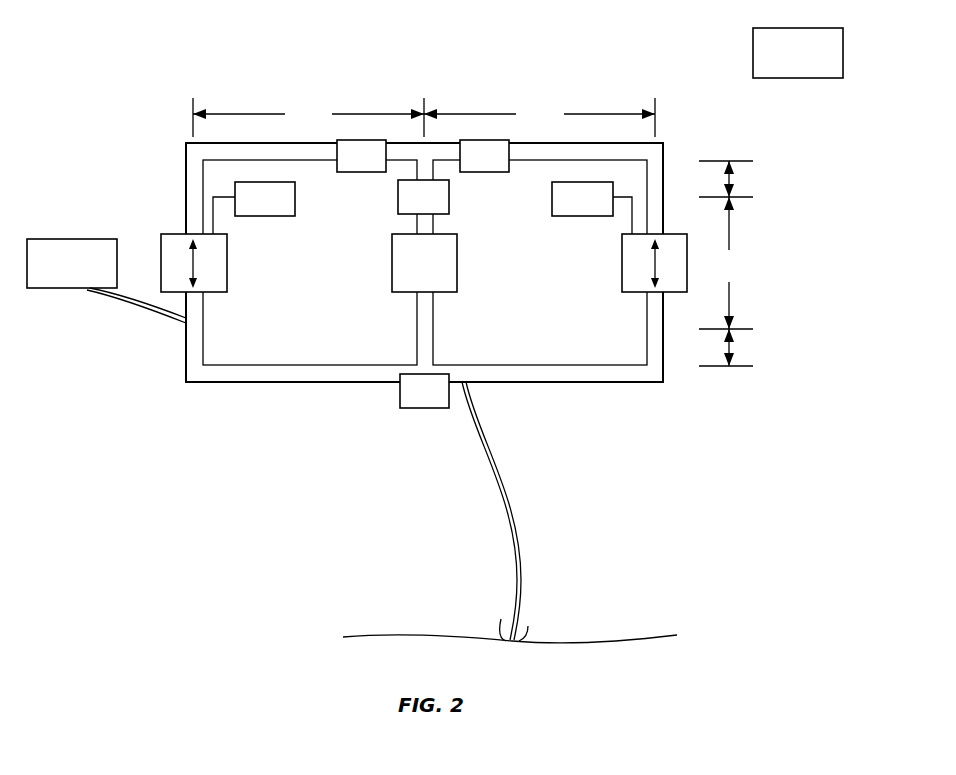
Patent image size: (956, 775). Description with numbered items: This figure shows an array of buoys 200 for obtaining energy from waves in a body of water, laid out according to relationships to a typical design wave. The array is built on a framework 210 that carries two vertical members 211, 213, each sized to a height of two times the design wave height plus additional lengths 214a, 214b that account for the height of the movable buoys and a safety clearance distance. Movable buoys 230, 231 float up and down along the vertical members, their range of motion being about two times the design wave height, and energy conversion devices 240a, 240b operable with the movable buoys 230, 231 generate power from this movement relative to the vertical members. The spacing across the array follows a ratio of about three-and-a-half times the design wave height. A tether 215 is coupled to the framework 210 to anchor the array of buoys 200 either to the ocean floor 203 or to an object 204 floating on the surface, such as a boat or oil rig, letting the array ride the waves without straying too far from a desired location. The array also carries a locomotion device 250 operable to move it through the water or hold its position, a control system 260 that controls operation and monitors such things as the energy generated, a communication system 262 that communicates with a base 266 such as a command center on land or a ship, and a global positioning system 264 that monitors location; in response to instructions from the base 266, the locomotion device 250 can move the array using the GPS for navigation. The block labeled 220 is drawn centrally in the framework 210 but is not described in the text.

The array of buoys 200 is at (386, 58).
The ocean floor 203 is at (452, 637).
The object floating on a surface of the body of water 204 is at (72, 263).
The framework 210 is at (592, 382).
The vertical member 211 is at (203, 340).
The vertical member 213 is at (647, 340).
The length 214a is at (733, 179).
The length 214b is at (733, 347).
The tether 215 is at (127, 315).
The controller 220 is at (424, 263).
The movable buoy 230 is at (227, 290).
The movable buoy 231 is at (622, 280).
The energy conversion device 240a is at (254, 208).
The energy conversion device 240b is at (592, 208).
The locomotion device 250 is at (424, 391).
The control system 260 is at (423, 197).
The communication system 262 is at (361, 156).
The global positioning system (GPS) 264 is at (484, 156).
The base 266 is at (798, 53).